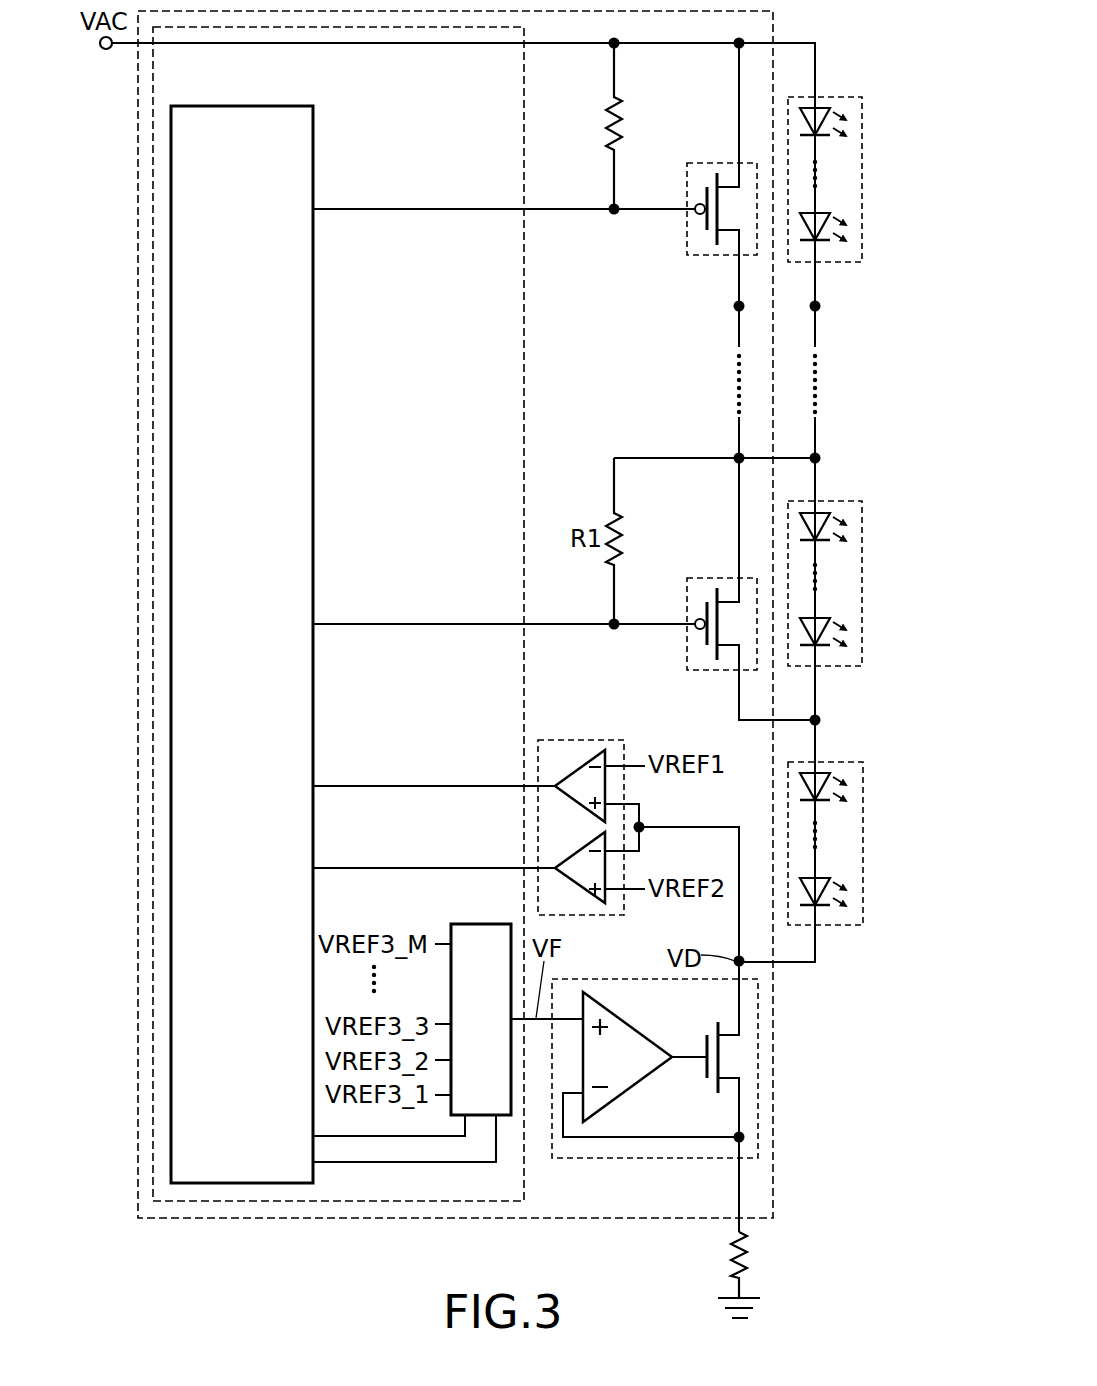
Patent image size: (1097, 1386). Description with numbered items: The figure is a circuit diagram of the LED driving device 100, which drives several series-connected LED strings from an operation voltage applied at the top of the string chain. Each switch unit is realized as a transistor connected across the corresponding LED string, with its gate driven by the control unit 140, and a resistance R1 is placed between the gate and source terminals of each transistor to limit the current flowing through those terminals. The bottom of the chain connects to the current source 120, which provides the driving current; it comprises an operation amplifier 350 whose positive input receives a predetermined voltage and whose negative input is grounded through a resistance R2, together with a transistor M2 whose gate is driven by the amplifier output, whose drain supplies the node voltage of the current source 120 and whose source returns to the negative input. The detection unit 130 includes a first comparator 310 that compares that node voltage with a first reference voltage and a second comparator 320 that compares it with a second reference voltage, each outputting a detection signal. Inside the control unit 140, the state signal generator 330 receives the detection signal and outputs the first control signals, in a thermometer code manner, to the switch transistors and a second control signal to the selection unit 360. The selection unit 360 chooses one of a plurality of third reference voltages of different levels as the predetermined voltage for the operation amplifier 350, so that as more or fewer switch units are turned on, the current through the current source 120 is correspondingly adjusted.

The LED driving device 100 is at (773, 22).
The control unit 140 is at (153, 282).
The state signal generator 330 is at (171, 449).
The detection unit 130 is at (603, 829).
The first comparator 310 is at (582, 768).
The second comparator 320 is at (582, 851).
The selection unit 360 is at (481, 924).
The current source 120 is at (694, 1076).
The operation amplifier 350 is at (628, 1088).
The transistor M2 is at (728, 1057).
The resistance R1 is at (596, 126).
The resistance R2 is at (753, 1275).